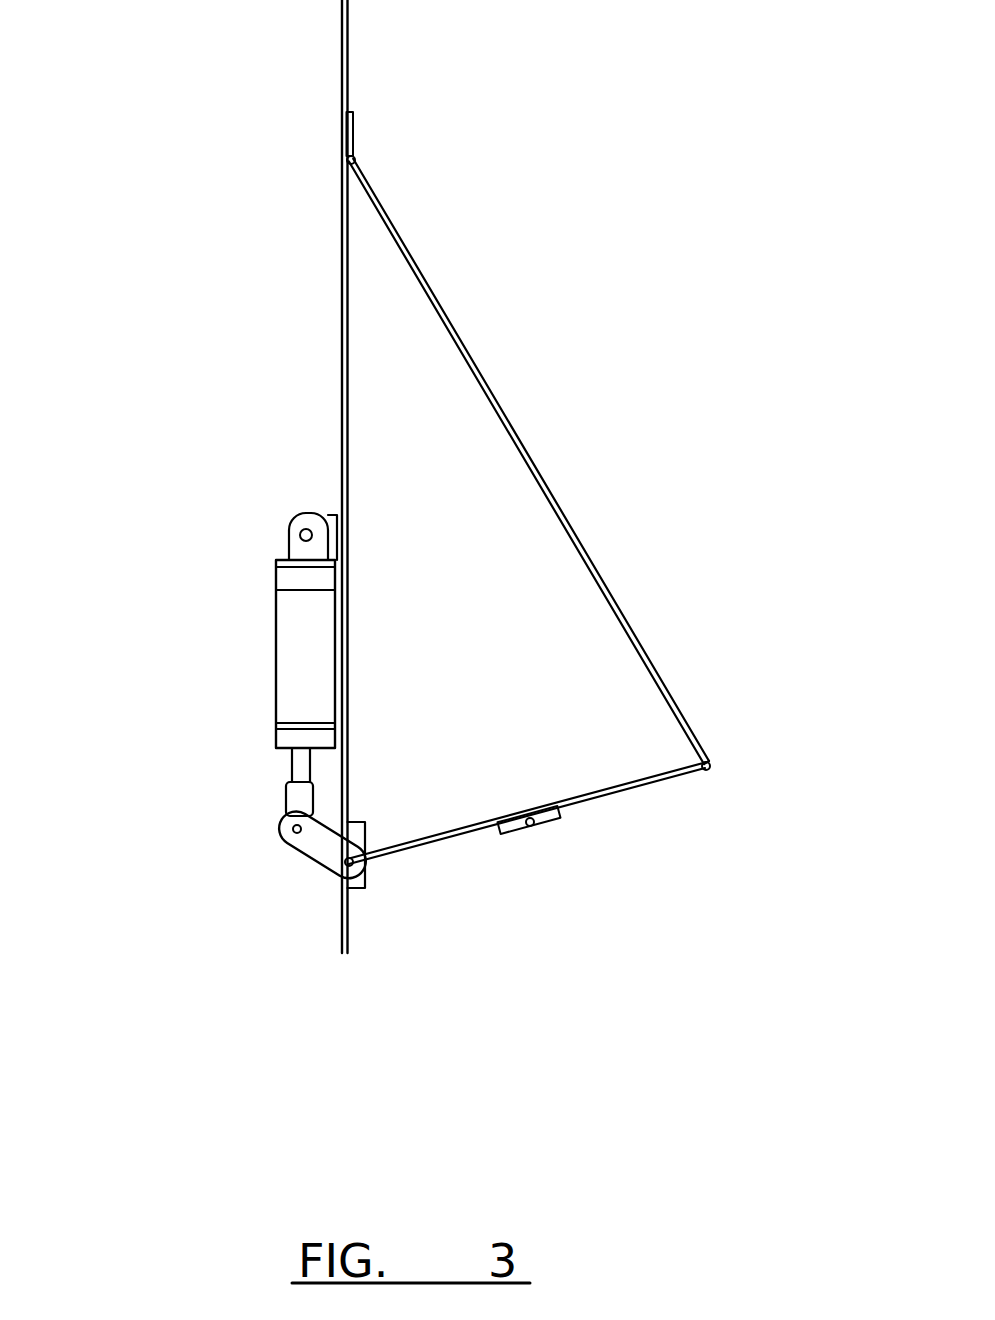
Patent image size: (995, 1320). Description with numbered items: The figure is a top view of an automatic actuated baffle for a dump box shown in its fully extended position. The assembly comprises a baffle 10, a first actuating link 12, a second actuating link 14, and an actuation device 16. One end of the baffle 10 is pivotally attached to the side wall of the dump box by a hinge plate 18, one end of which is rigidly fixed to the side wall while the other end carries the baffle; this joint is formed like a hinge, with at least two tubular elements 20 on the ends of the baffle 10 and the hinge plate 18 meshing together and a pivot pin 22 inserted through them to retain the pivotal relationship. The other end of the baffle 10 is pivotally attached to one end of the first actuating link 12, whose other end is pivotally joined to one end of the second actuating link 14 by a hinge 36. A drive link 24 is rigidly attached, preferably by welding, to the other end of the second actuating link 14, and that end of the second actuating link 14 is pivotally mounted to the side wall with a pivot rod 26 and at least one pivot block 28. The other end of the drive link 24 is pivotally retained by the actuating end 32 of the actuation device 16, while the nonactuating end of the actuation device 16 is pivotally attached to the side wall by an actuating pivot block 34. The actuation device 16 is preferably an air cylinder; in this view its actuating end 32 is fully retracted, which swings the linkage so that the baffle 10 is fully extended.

The baffle 10 is at (467, 350).
The first actuating link 12 is at (595, 792).
The second actuating link 14 is at (458, 840).
The actuation device 16 is at (305, 640).
The hinge plate 18 is at (352, 145).
The tubular elements 20 is at (355, 162).
The pivot pin 22 is at (346, 160).
The drive link 24 is at (315, 843).
The pivot rod 26 is at (352, 867).
The pivot block 28 is at (358, 822).
The actuating end 32 is at (300, 803).
The actuating pivot block 34 is at (327, 513).
The hinge 36 is at (534, 826).